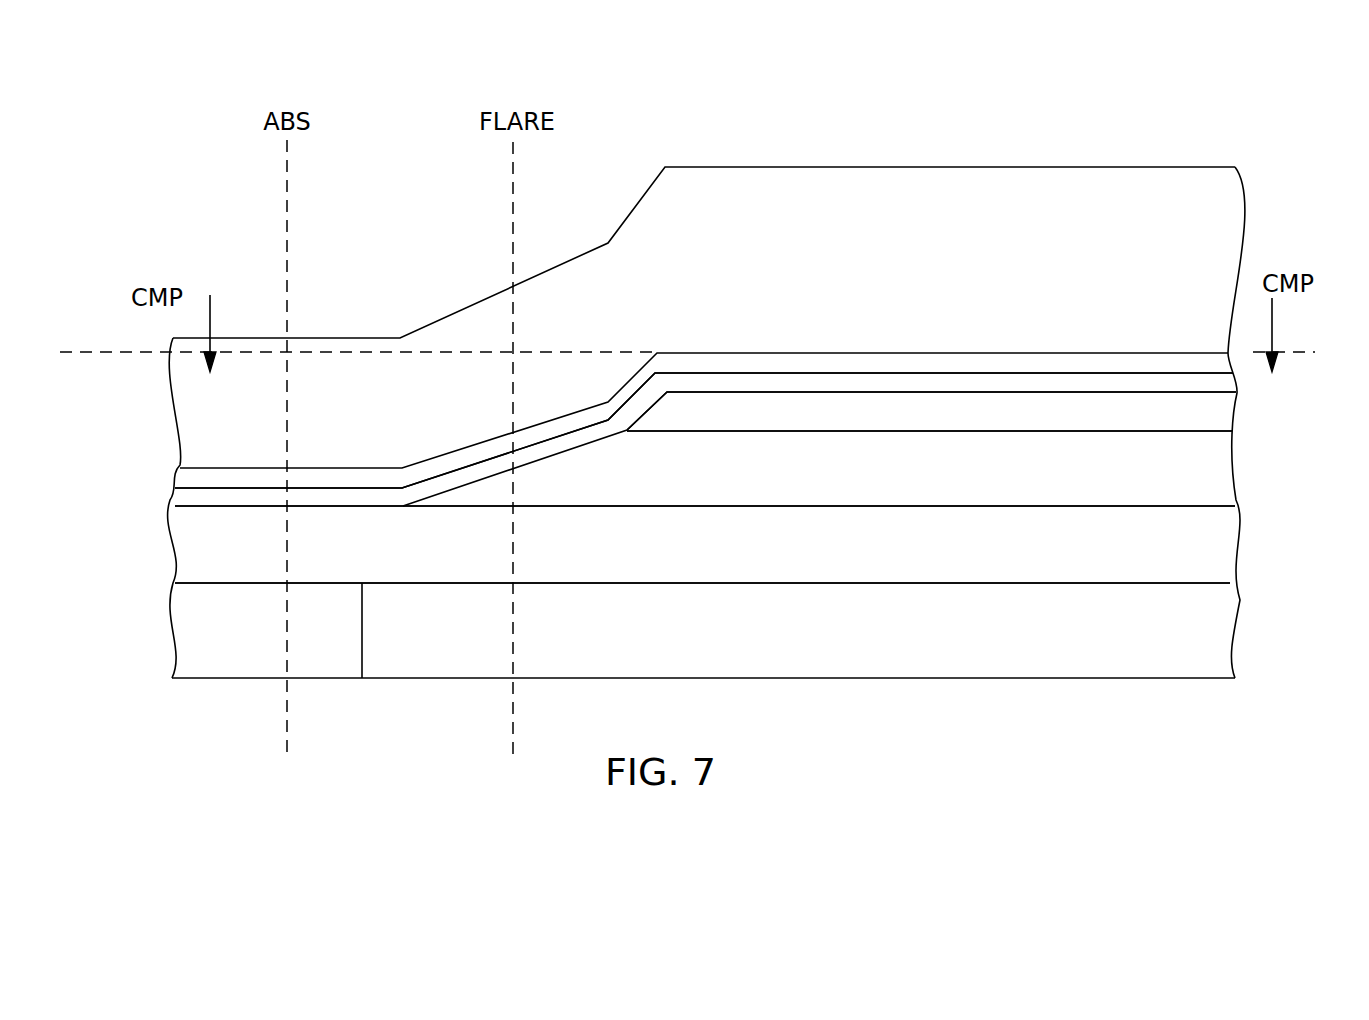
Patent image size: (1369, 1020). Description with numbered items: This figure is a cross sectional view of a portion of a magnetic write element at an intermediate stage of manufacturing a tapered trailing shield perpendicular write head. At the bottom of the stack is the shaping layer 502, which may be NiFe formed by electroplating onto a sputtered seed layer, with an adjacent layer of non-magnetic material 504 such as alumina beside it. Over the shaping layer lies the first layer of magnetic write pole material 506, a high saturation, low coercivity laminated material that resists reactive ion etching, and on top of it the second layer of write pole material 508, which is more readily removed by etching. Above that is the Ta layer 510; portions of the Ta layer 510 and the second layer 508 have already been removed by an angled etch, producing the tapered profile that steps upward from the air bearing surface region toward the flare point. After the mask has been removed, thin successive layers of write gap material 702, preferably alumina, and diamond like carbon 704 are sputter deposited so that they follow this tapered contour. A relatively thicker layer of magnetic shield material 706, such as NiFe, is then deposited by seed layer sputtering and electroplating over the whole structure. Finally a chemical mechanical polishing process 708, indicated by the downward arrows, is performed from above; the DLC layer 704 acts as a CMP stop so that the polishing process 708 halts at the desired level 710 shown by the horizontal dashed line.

The shaping layer 502 is at (897, 622).
The layer of non-magnetic material 504 is at (312, 635).
The first layer of magnetic write pole material 506 is at (915, 545).
The second layer of write pole material 508 is at (922, 464).
The Ta layer 510 is at (782, 419).
The write gap material 702 is at (940, 382).
The diamond like carbon layer 704 is at (925, 365).
The layer of magnetic shield material 706 is at (870, 250).
The chemical mechanical polishing process 708 is at (213, 326).
The desired level 710 is at (88, 352).